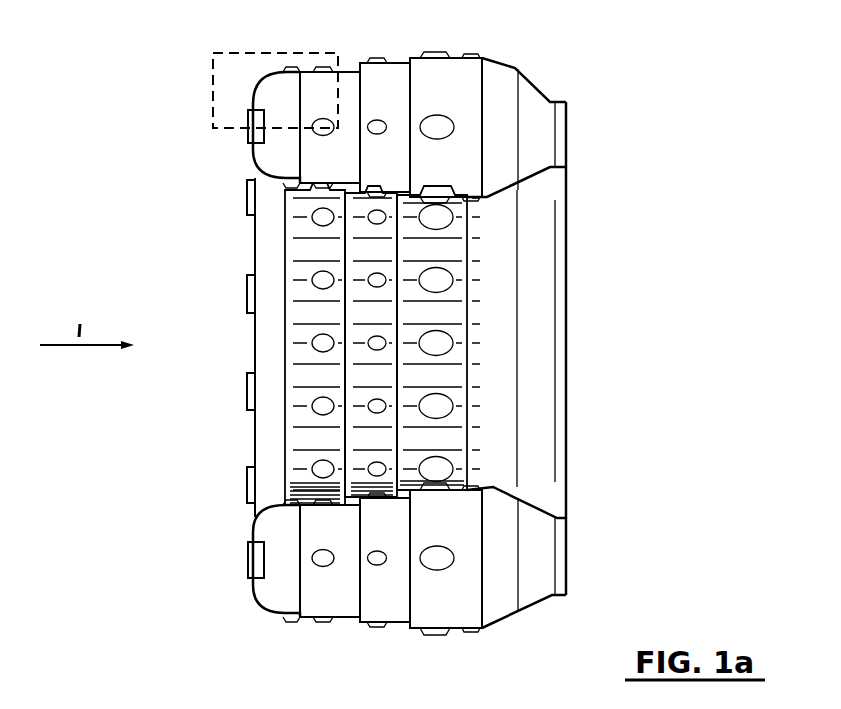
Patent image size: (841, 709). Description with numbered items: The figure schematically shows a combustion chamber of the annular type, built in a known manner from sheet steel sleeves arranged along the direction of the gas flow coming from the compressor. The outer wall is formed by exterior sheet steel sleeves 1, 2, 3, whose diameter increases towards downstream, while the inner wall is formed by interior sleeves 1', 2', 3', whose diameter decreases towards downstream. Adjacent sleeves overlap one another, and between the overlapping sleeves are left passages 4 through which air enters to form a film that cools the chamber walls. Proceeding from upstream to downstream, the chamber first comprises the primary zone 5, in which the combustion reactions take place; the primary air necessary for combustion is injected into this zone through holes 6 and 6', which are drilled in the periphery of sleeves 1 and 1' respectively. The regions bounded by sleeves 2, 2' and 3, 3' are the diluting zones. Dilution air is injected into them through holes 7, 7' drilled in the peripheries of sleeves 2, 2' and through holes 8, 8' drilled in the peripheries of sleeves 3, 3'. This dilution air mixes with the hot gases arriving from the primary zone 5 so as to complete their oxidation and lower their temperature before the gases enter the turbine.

The exterior sheet steel sleeve 1 is at (325, 98).
The holes 6 is at (323, 101).
The exterior sheet steel sleeve 2 is at (381, 103).
The holes 7 is at (384, 105).
The exterior sheet steel sleeve 3 is at (442, 105).
The holes 8 is at (450, 108).
The interior sleeve 1' is at (268, 344).
The interior sleeve 2' is at (294, 341).
The interior sleeve 3' is at (331, 338).
The holes 6' is at (468, 343).
The holes 7' is at (496, 343).
The holes 8' is at (522, 341).
The passages 4 is at (335, 621).
The primary zone 5 is at (305, 562).